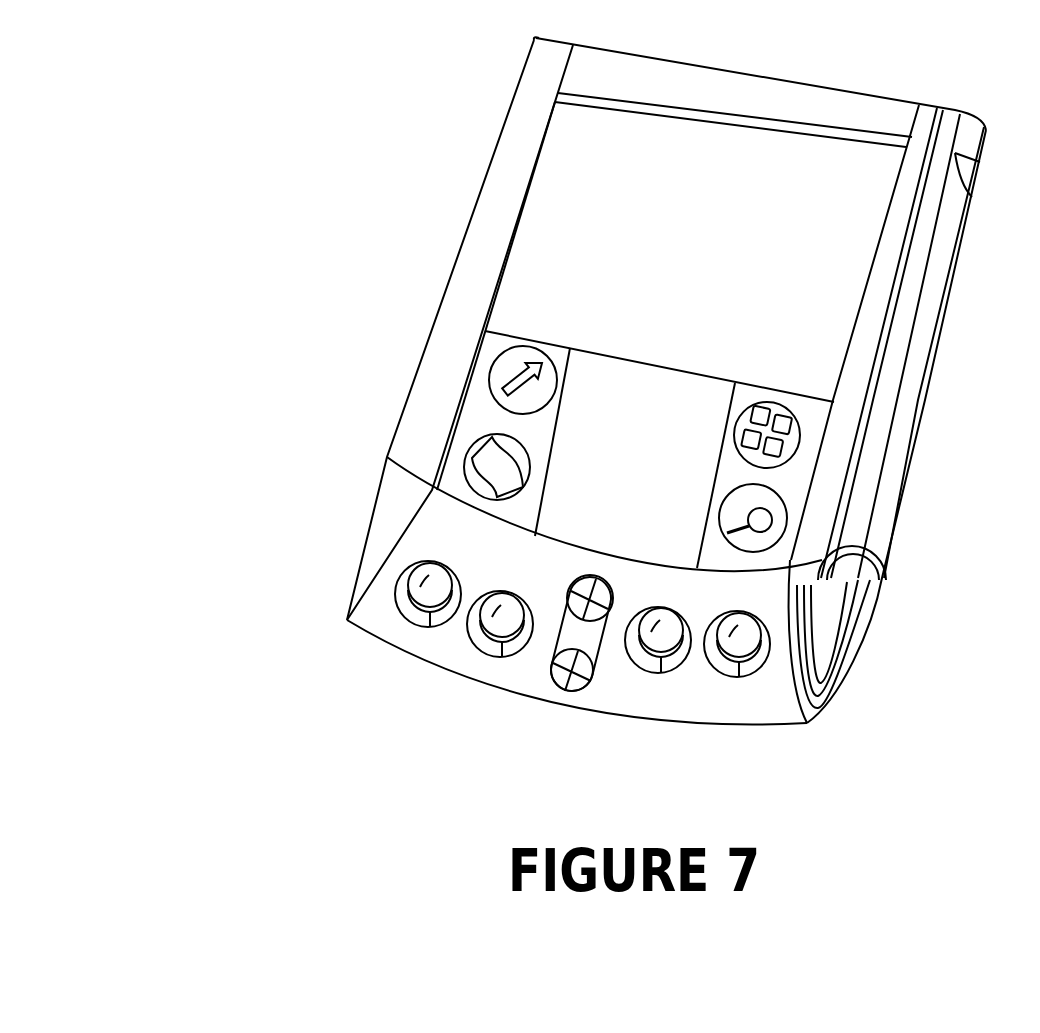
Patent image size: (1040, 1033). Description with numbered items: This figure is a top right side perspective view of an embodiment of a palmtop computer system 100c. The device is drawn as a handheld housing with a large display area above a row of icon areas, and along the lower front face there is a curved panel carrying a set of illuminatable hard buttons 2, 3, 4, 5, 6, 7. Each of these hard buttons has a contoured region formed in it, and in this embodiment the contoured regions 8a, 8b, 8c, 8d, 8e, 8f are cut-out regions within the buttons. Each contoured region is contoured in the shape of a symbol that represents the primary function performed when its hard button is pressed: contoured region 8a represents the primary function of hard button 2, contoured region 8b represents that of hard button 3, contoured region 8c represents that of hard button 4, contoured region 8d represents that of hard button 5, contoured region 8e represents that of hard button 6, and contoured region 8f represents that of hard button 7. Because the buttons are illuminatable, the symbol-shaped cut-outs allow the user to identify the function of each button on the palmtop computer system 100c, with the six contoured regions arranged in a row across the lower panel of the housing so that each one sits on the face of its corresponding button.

The palmtop computer system 100c is at (175, 91).
The illuminatable hard button 2 is at (403, 617).
The illuminatable hard button 3 is at (510, 660).
The illuminatable hard button 4 is at (673, 671).
The illuminatable hard button 5 is at (573, 700).
The illuminatable hard button 6 is at (750, 676).
The illuminatable hard button 7 is at (786, 694).
The contoured region 8a is at (425, 583).
The contoured region 8b is at (487, 620).
The contoured region 8c is at (573, 594).
The contoured region 8d is at (566, 688).
The contoured region 8e is at (652, 657).
The contoured region 8f is at (752, 641).